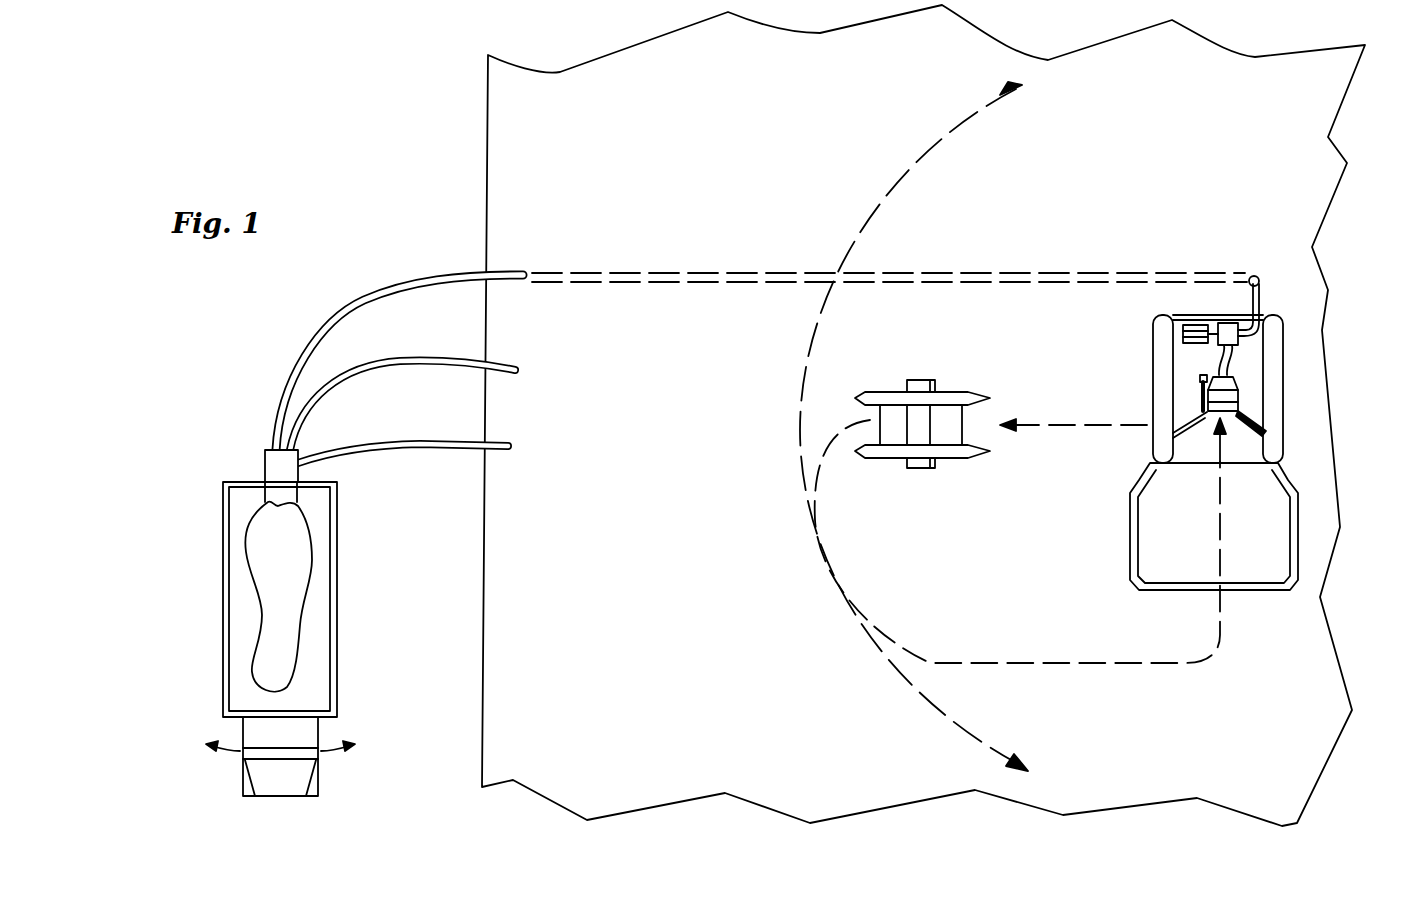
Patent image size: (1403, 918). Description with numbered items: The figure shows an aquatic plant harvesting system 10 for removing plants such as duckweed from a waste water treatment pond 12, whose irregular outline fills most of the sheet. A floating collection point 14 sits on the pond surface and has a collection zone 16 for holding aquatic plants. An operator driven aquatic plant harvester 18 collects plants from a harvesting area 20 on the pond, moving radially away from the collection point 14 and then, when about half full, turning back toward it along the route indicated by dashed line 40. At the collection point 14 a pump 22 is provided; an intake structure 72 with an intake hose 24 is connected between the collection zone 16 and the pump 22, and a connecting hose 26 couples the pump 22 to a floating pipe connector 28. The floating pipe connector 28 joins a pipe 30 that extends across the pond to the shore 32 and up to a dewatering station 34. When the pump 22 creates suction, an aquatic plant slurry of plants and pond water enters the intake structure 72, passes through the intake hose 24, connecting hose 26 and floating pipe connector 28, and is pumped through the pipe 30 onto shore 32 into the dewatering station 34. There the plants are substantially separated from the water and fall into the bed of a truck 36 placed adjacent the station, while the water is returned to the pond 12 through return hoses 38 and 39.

The aquatic plant harvesting system 10 is at (348, 124).
The waste water treatment pond 12 is at (595, 113).
The collection point 14 is at (1278, 316).
The collection zone 16 is at (1243, 457).
The aquatic plant harvester 18 is at (885, 392).
The harvesting area 20 is at (1156, 706).
The pump 22 is at (1285, 322).
The intake hose 24 is at (1238, 369).
The connecting hose 26 is at (1262, 302).
The floating pipe connector 28 is at (1255, 275).
The pipe 30 is at (1012, 270).
The shore 32 is at (398, 235).
The dewatering station 34 is at (256, 460).
The truck 36 is at (338, 602).
The return hose 38 is at (416, 372).
The return hose 39 is at (395, 447).
The dashed line indicating path of harvester 40 is at (1071, 428).
The intake structure 72 is at (1236, 432).